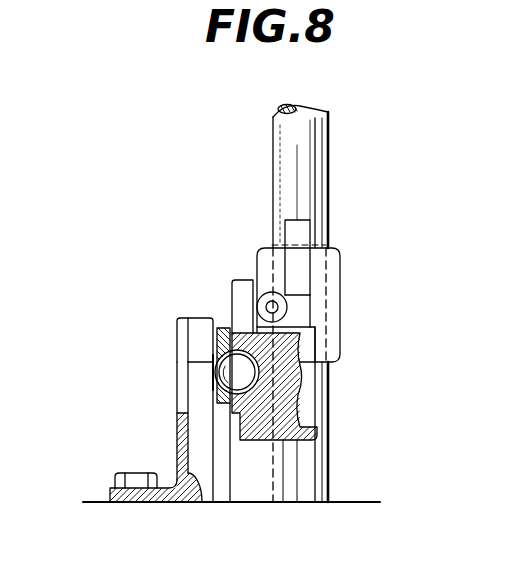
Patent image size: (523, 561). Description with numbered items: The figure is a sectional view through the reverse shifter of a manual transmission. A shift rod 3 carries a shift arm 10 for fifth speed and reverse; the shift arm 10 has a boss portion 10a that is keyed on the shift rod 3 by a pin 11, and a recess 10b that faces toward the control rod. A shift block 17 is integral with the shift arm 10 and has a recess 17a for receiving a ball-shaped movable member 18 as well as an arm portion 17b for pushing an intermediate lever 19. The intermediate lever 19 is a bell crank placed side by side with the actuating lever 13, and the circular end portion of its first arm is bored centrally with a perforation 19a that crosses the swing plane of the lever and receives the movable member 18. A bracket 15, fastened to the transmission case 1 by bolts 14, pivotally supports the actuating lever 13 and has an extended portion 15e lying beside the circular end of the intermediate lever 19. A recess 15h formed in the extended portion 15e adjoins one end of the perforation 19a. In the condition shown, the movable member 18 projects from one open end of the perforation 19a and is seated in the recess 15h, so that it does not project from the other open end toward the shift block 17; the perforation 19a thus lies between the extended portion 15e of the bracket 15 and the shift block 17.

The transmission case 1 is at (365, 501).
The shift rod 3 is at (330, 152).
The shift arm 10 is at (311, 307).
The boss portion 10a is at (342, 280).
The recess 10b is at (297, 293).
The pin 11 is at (265, 248).
The actuating lever 13 is at (200, 325).
The bolts 14 is at (119, 478).
The bracket 15 is at (110, 492).
The extended portion 15e is at (215, 490).
The recess 15h is at (216, 372).
The shift block 17 is at (308, 441).
The recess 17a is at (304, 374).
The arm portion 17b is at (259, 441).
The movable member 18 is at (252, 378).
The intermediate lever 19 is at (237, 297).
The perforation 19a is at (270, 380).